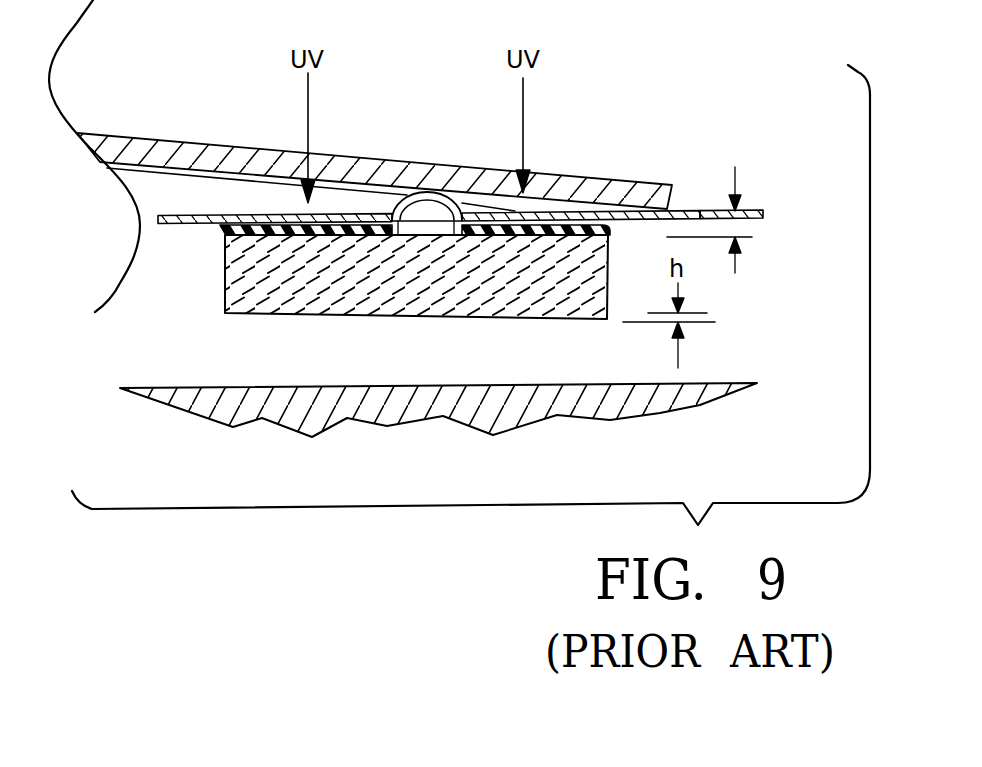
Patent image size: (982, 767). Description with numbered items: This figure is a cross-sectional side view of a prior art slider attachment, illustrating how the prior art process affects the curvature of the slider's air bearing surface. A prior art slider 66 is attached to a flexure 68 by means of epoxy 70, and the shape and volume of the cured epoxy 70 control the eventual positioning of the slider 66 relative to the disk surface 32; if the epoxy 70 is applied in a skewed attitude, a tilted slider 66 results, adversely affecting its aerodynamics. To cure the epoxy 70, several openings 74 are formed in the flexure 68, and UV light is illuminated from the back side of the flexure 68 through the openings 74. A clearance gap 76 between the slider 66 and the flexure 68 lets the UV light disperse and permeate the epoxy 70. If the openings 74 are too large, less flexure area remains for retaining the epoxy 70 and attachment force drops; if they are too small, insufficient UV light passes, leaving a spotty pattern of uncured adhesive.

The disk surface 32 is at (714, 383).
The prior art slider 66 is at (237, 292).
The flexure 68 is at (765, 212).
The epoxy 70 is at (220, 234).
The openings 74 is at (305, 213).
The clearance gap 76 is at (733, 227).